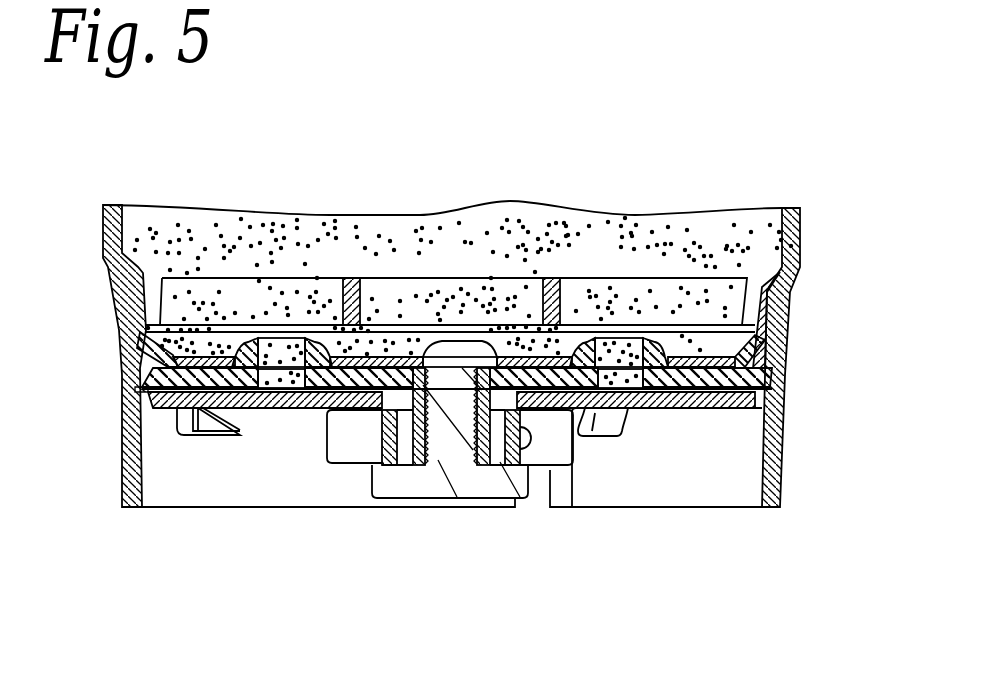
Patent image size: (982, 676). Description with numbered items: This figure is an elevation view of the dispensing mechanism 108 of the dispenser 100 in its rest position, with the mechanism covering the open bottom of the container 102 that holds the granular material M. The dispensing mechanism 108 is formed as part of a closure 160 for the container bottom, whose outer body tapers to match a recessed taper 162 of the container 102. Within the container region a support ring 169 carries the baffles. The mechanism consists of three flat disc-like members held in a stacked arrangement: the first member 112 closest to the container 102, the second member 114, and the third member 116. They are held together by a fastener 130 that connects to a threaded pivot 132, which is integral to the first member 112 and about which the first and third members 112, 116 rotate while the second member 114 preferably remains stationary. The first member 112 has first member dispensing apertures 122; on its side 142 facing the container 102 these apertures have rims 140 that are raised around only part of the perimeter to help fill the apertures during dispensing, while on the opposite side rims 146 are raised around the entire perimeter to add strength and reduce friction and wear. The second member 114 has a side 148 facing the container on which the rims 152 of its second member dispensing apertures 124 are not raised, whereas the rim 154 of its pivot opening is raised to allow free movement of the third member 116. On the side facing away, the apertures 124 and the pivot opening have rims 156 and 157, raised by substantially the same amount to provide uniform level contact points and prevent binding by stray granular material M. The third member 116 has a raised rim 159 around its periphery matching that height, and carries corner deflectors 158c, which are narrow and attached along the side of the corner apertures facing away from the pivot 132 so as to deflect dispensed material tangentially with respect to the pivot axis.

The dispenser 100 is at (126, 181).
The container 102 is at (773, 184).
The dispensing mechanism 108 is at (804, 341).
The granular material M is at (511, 211).
The rim 140 is at (248, 350).
The rim 146 is at (330, 350).
The rim 154 is at (396, 385).
The support ring 169 is at (548, 326).
The first member dispensing aperture 122 is at (622, 350).
The recessed taper 162 is at (767, 298).
The first member 112 is at (700, 367).
The second member 114 is at (750, 382).
The third member 116 is at (745, 402).
The second member dispensing aperture 124 is at (632, 388).
The closure 160 is at (790, 487).
The corner deflector 158c is at (212, 427).
The rim 156 is at (248, 382).
The rim 152 is at (282, 345).
The rim 157 is at (397, 383).
The fastener 130 is at (438, 462).
The threaded pivot 132 is at (483, 455).
The side 142 is at (142, 332).
The side 148 is at (176, 363).
The raised rim 159 is at (145, 391).